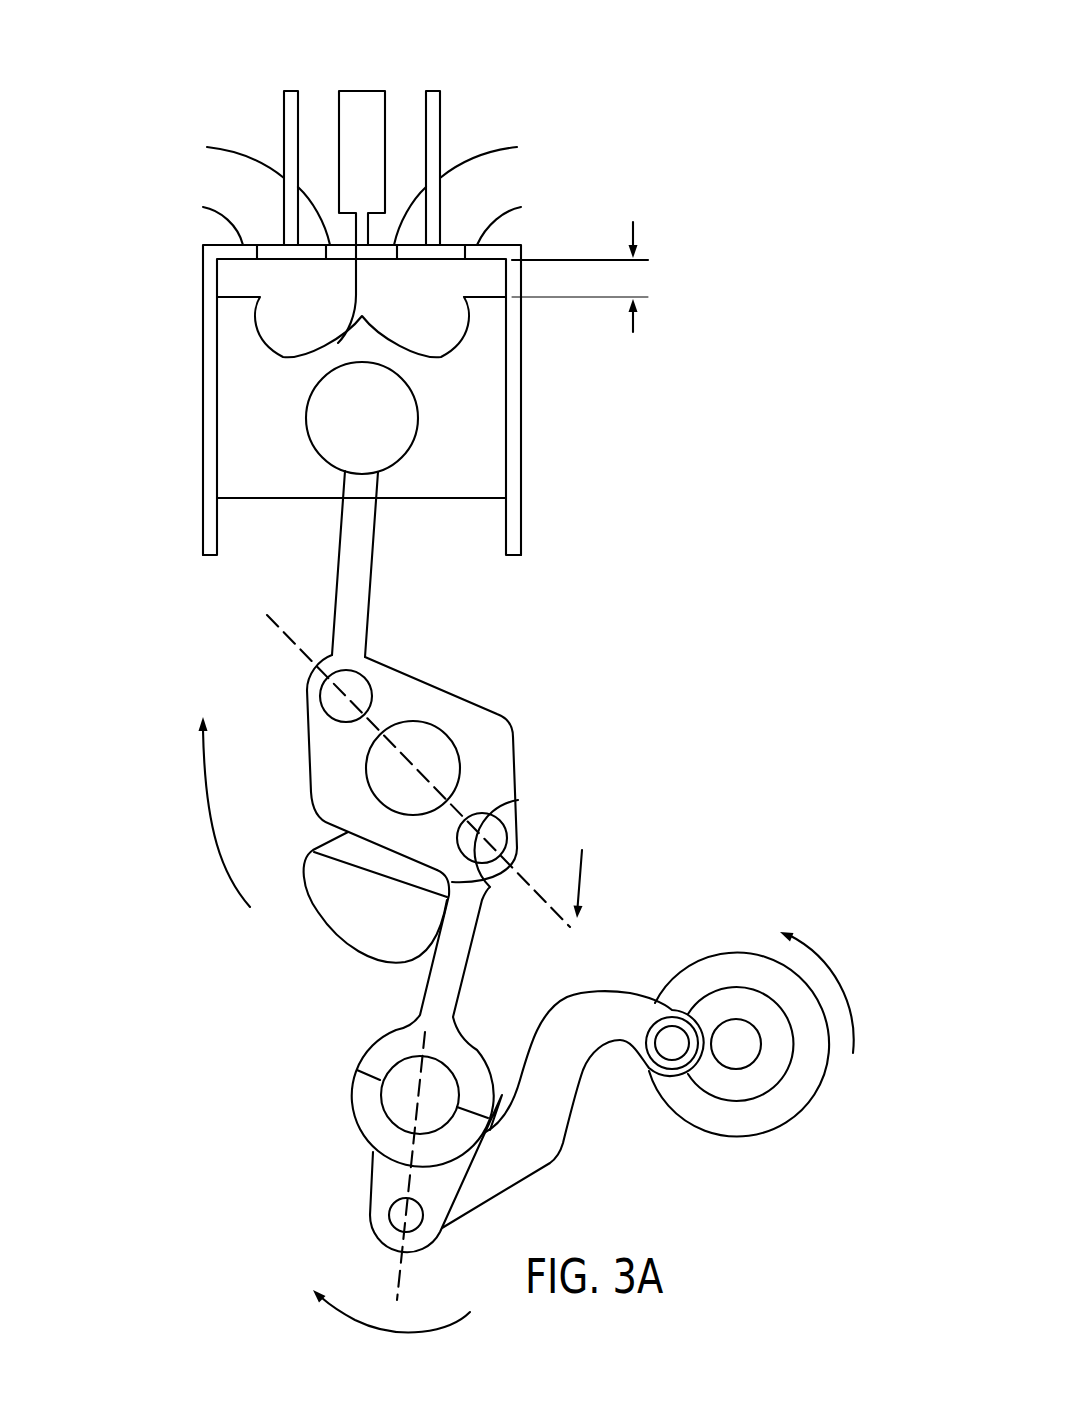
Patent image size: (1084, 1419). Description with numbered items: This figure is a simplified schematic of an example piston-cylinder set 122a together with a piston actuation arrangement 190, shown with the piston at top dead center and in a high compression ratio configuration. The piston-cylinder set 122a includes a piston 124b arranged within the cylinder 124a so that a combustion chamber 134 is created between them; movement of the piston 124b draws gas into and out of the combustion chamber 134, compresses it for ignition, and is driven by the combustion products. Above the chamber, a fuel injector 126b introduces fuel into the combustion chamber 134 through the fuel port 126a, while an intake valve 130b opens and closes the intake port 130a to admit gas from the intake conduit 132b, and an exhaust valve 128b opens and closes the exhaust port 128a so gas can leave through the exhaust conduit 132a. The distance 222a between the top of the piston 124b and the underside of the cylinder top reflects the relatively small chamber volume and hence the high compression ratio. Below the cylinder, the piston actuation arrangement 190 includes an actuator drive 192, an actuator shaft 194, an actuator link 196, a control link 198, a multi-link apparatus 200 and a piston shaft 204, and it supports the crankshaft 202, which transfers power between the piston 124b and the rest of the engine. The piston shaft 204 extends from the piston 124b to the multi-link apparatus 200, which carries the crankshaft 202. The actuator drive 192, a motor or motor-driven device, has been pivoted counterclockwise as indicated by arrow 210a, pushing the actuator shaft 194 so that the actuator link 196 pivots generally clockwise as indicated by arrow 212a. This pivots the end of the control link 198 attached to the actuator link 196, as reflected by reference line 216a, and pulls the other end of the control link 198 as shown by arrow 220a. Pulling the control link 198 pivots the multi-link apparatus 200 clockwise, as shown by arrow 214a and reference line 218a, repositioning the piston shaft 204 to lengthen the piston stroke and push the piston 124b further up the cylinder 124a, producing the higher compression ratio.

The piston-cylinder set 122a is at (533, 95).
The cylinder 124a is at (560, 590).
The piston 124b is at (233, 499).
The fuel port 126a is at (287, 371).
The fuel injector 126b is at (360, 91).
The exhaust port 128a is at (258, 259).
The exhaust valve 128b is at (284, 102).
The intake port 130a is at (463, 260).
The intake valve 130b is at (440, 115).
The exhaust conduit 132a is at (215, 177).
The intake conduit 132b is at (507, 178).
The combustion chamber 134 is at (435, 333).
The distance 222a is at (633, 232).
The piston actuation arrangement 190 is at (188, 670).
The actuator drive 192 is at (763, 1093).
The actuator shaft 194 is at (620, 990).
The actuator link 196 is at (373, 1181).
The control link 198 is at (463, 942).
The multi-link apparatus 200 is at (338, 952).
The crankshaft 202 is at (433, 756).
The piston shaft 204 is at (364, 592).
The arrow 210a is at (841, 990).
The arrow 212a is at (458, 1322).
The arrow 214a is at (205, 826).
The reference line 216a is at (400, 1277).
The reference line 218a is at (290, 652).
The arrow 220a is at (583, 869).